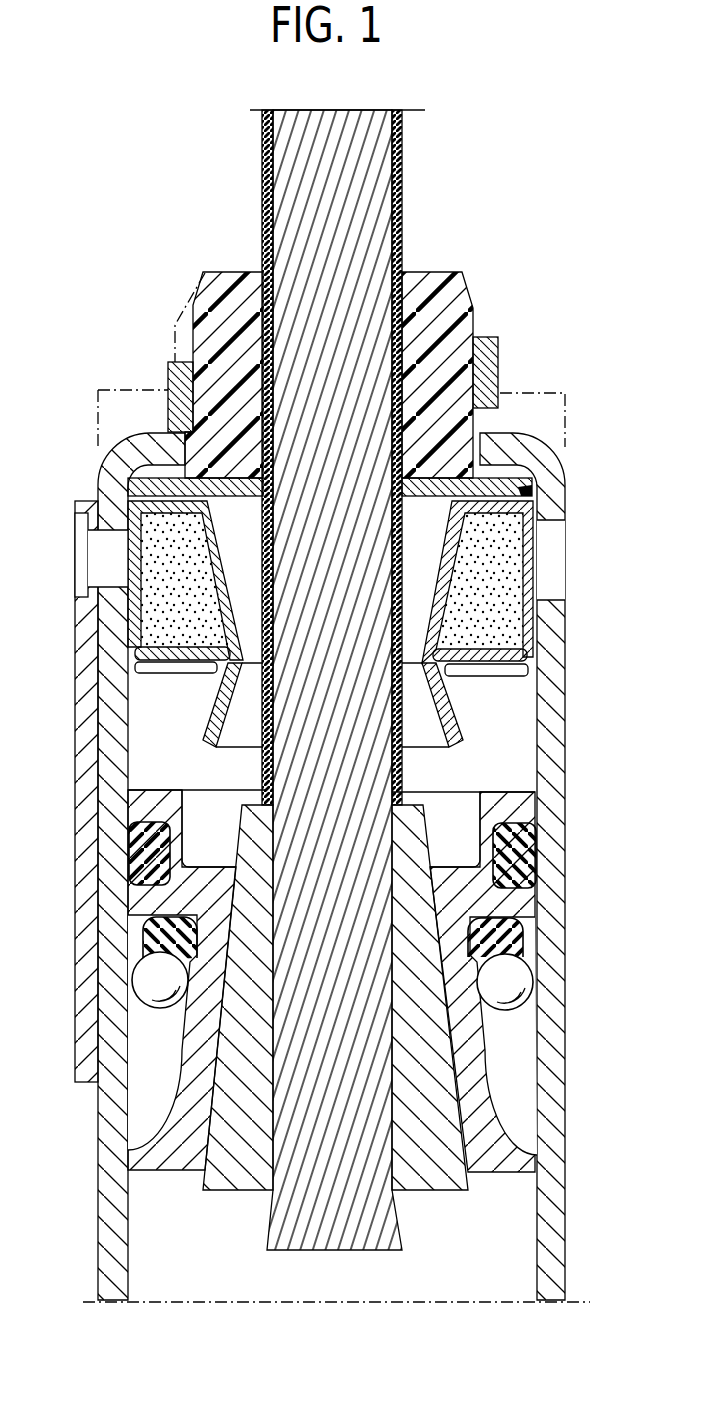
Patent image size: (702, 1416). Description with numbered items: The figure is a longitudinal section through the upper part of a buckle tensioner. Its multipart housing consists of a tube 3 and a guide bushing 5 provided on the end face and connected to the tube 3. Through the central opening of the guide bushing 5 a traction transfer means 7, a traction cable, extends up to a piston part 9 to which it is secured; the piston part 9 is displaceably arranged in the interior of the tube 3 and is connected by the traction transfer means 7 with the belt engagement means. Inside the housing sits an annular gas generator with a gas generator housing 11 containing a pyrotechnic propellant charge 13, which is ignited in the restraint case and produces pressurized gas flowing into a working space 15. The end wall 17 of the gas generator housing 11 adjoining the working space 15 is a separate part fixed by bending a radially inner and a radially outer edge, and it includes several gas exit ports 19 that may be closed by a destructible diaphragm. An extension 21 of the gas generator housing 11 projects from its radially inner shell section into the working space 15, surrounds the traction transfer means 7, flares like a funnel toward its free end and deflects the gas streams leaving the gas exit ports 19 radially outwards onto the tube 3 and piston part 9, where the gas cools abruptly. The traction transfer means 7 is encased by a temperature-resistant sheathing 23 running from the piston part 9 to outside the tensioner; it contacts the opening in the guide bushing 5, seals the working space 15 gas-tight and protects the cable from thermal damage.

The tube 3 is at (545, 1200).
The guide bushing 5 is at (453, 332).
The traction transfer means 7 is at (368, 160).
The piston part 9 is at (427, 1088).
The gas generator housing 11 is at (530, 547).
The pyrotechnic propellant charge 13 is at (512, 622).
The working space 15 is at (510, 740).
The end wall 17 is at (513, 664).
The gas exit ports 19 is at (180, 660).
The extension 21 is at (205, 742).
The sheathing 23 is at (263, 158).